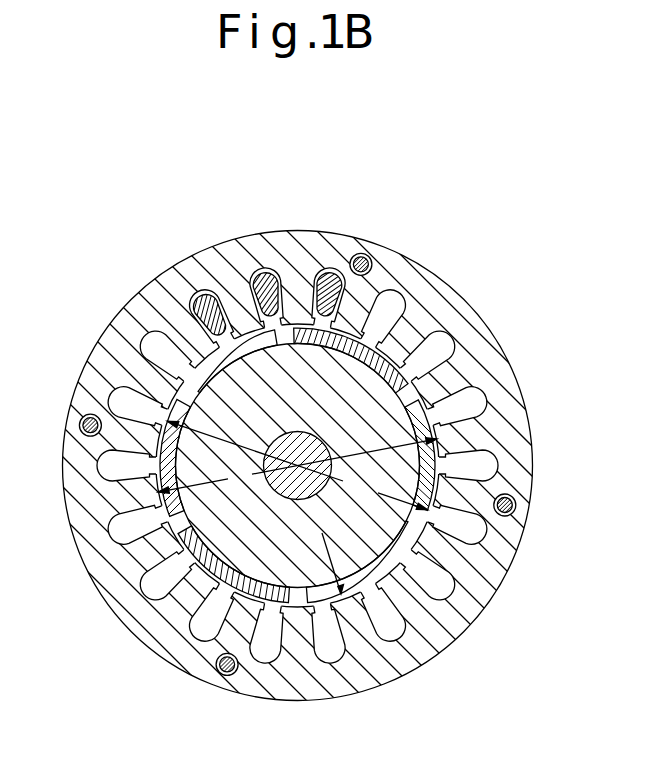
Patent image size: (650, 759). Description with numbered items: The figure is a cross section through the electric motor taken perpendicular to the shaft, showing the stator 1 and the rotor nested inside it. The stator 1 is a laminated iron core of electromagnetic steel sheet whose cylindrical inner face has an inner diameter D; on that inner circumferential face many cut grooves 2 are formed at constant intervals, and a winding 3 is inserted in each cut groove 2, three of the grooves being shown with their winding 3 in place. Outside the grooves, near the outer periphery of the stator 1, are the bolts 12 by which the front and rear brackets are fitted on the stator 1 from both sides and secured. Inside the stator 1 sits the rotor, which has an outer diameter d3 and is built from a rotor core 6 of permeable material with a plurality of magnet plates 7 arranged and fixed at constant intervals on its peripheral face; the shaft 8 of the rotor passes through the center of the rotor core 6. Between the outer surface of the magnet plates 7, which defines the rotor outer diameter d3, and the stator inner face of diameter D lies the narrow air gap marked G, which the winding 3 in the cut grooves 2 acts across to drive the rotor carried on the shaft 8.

The stator 1 is at (456, 303).
The cut grooves 2 is at (397, 296).
The winding 3 is at (212, 290).
The rotor core 6 is at (452, 644).
The magnet plates 7 is at (433, 439).
The shaft 8 is at (304, 500).
The bolts 12 is at (79, 421).
The inner diameter of stator D is at (297, 465).
The outer diameter of rotor d3 is at (297, 465).
The air gap G is at (346, 605).